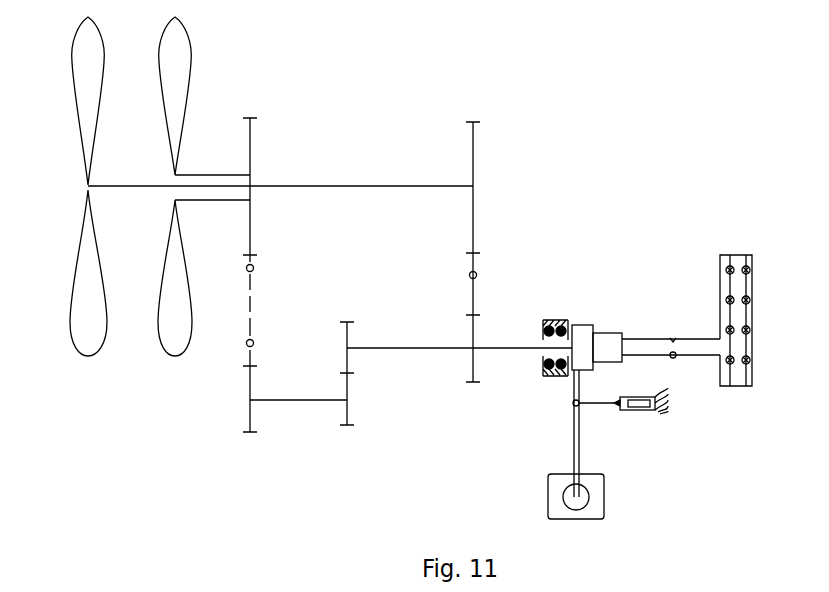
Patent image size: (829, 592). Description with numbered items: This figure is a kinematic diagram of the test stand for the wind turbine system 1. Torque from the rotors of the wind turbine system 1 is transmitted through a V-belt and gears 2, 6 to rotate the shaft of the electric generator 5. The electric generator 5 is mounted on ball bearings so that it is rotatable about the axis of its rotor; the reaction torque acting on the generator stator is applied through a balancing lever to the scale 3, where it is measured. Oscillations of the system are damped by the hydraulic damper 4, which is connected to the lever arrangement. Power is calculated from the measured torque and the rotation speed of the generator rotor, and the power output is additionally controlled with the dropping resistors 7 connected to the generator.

The wind turbine system 1 is at (175, 345).
The gears 2 is at (345, 374).
The scale 3 is at (554, 490).
The hydraulic damper 4 is at (647, 412).
The electric generator 5 is at (583, 340).
The gears 6 is at (475, 272).
The dropping resistors 7 is at (751, 320).